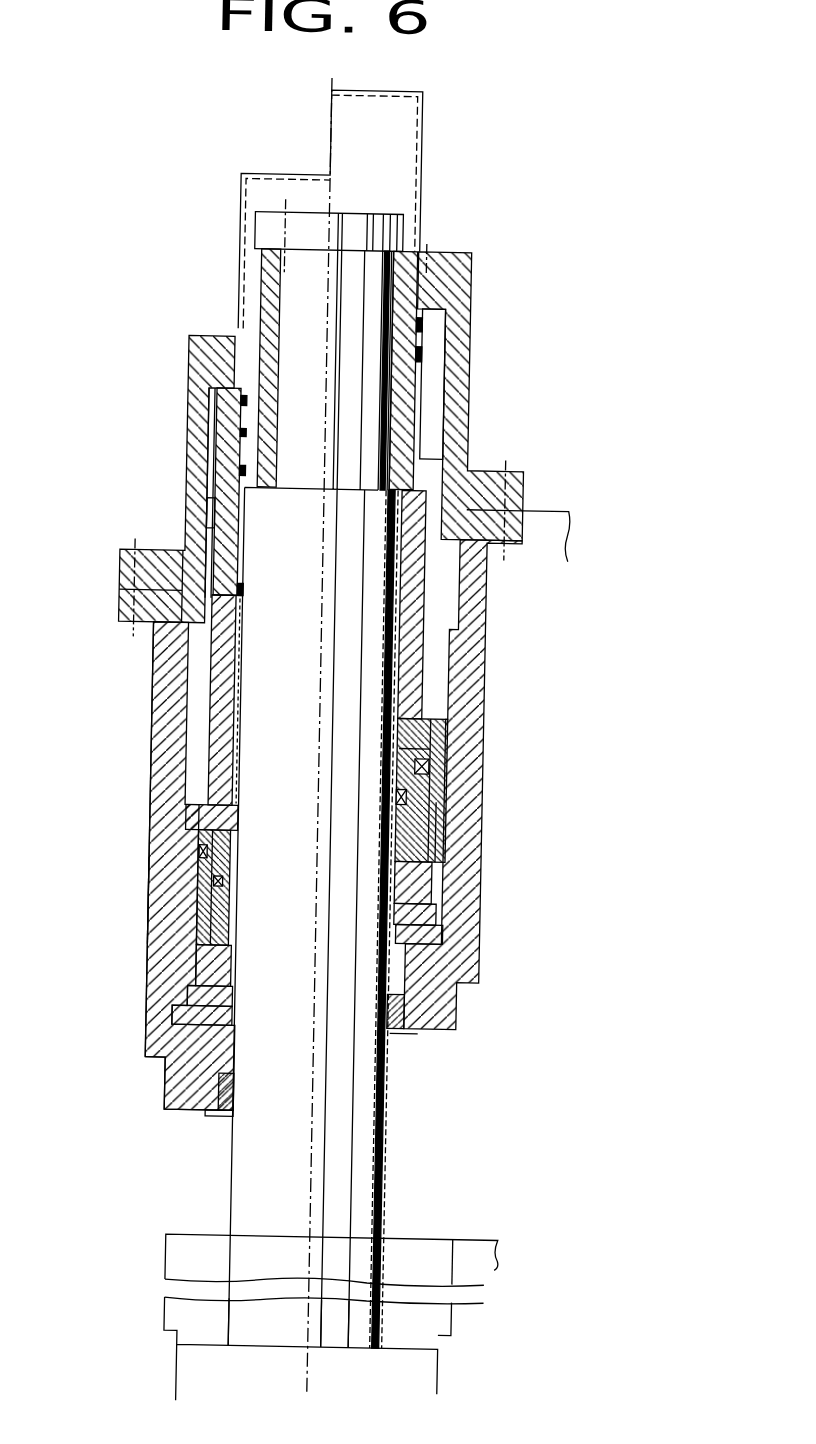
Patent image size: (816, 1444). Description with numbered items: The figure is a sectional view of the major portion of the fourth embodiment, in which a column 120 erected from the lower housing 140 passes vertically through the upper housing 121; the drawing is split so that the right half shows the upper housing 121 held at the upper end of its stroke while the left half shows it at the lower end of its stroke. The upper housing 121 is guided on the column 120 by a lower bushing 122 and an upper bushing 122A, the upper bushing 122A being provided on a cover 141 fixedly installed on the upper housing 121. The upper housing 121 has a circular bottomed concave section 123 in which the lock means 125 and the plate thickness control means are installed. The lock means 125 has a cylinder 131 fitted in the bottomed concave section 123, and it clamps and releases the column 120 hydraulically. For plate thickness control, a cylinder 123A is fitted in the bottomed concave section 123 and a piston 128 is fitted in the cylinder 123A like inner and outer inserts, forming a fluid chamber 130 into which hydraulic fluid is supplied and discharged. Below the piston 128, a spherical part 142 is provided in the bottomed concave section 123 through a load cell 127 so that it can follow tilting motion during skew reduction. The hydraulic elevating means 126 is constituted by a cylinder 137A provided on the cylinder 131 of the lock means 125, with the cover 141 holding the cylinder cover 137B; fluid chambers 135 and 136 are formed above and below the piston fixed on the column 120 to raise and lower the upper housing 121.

The column 120 is at (384, 1156).
The upper housing 121 is at (152, 708).
The lower bushing 122 is at (176, 1068).
The upper bushing 122A is at (220, 372).
The bottomed concave section 123 is at (438, 886).
The cylinder 123A is at (183, 868).
The lock means 125 is at (200, 659).
The hydraulic elevating means 126 is at (433, 391).
The load cell 127 is at (204, 969).
The piston 128 is at (196, 934).
The fluid chamber 130 is at (192, 822).
The cylinder 131 is at (213, 759).
The fluid chamber 135 is at (222, 455).
The fluid chamber 136 is at (208, 515).
The cylinder 137A is at (236, 494).
The cylinder cover 137B is at (404, 316).
The lower housing 140 is at (177, 1256).
The cover 141 is at (206, 394).
The spherical part 142 is at (195, 992).